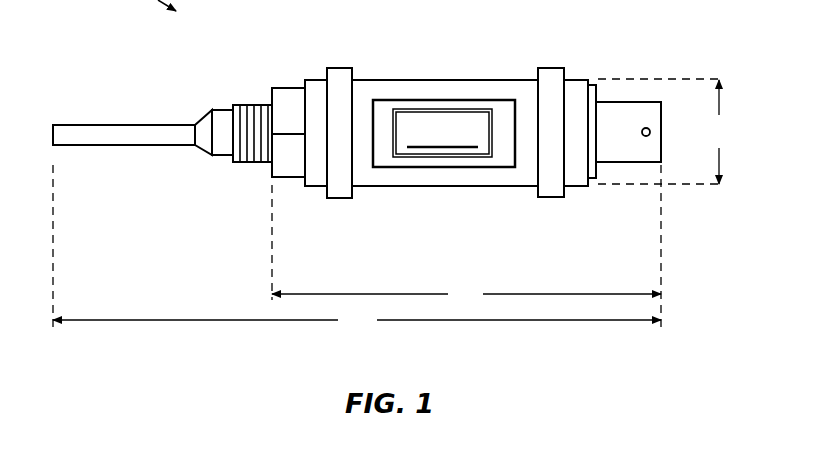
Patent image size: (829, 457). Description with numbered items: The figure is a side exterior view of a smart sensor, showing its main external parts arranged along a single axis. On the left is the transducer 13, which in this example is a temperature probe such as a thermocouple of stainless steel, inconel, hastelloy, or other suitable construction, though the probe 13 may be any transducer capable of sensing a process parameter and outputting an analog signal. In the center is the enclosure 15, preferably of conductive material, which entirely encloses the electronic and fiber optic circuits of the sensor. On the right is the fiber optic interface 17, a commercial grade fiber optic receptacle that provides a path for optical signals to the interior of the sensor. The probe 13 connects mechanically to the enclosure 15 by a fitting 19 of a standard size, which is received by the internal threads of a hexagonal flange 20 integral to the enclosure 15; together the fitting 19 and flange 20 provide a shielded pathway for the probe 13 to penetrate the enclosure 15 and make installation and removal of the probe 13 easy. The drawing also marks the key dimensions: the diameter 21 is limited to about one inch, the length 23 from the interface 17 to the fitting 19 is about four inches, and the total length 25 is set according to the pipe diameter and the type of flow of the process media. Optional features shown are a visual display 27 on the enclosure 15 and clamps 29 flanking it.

The transducer 13 is at (48, 153).
The enclosure 15 is at (412, 80).
The fiber optic interface 17 is at (641, 101).
The fitting 19 is at (240, 104).
The hexagonal flange 20 is at (280, 88).
The diameter 21 is at (665, 131).
The length 23 is at (466, 246).
The total length 25 is at (357, 248).
The visual display 27 is at (498, 103).
The clamps 29 is at (338, 198).